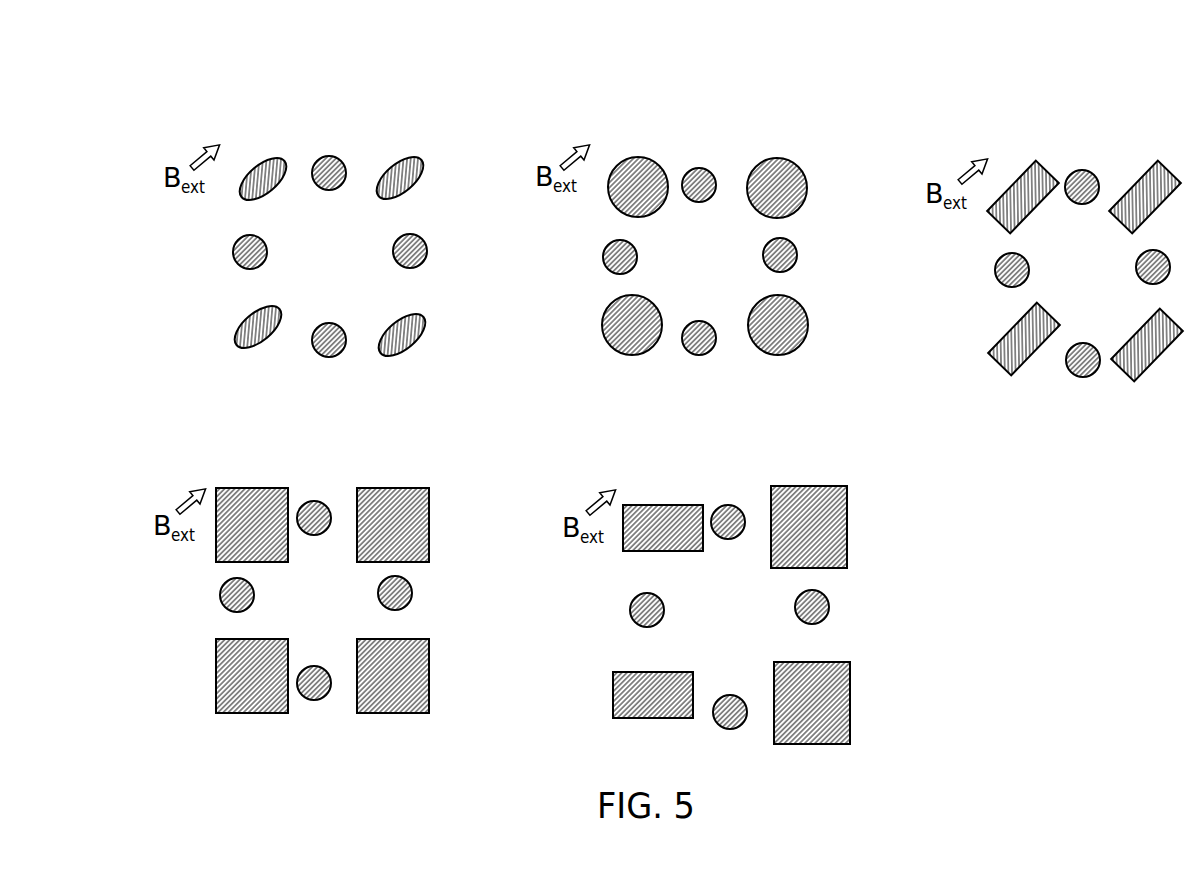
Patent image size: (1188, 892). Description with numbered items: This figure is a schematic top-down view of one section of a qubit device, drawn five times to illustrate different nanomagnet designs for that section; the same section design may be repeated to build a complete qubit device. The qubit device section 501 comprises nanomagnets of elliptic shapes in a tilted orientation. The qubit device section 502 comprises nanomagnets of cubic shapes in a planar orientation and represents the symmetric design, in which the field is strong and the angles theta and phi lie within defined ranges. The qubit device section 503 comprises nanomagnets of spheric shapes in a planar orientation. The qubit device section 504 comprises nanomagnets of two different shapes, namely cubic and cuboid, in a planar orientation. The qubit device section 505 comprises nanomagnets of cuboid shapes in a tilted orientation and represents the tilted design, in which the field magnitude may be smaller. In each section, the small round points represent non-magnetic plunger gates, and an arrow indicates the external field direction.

The qubit device section 501 is at (330, 206).
The qubit device section 502 is at (322, 551).
The qubit device section 503 is at (705, 202).
The qubit device section 504 is at (731, 568).
The qubit device section 505 is at (1085, 221).